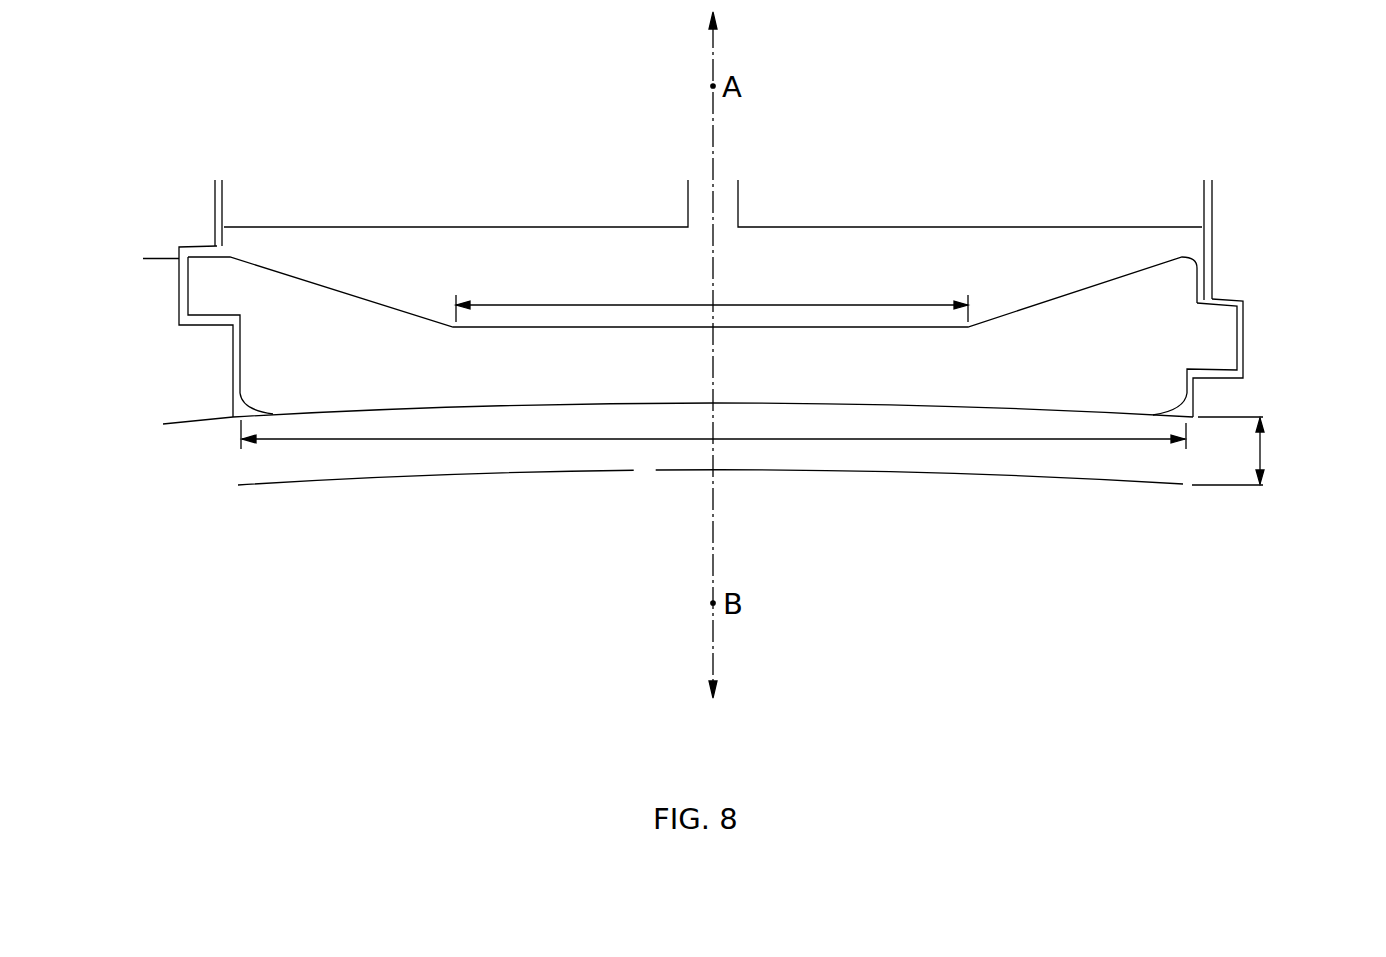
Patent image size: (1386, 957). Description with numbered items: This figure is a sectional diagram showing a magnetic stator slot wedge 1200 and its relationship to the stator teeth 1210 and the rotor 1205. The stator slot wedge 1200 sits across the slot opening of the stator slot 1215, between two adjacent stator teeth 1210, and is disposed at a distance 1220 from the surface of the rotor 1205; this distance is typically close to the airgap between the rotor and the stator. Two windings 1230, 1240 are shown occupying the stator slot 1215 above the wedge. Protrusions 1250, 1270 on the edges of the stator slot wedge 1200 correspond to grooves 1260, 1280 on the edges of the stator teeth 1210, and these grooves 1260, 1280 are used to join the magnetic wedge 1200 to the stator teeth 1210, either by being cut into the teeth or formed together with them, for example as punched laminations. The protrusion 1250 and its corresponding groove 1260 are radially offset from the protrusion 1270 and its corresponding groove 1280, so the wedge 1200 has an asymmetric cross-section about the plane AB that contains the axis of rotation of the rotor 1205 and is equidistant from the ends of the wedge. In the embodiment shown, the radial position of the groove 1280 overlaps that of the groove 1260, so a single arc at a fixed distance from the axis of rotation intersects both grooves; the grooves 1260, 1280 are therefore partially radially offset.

The magnetic stator slot wedge 1200 is at (896, 382).
The rotor 1205 is at (1165, 498).
The stator teeth 1210 is at (166, 204).
The stator slot 1215 is at (796, 263).
The distance 1220 is at (1260, 453).
The winding 1230 is at (523, 178).
The winding 1240 is at (1020, 178).
The protrusion 1250 is at (185, 287).
The groove 1260 is at (192, 247).
The protrusion 1270 is at (1242, 330).
The groove 1280 is at (1228, 297).